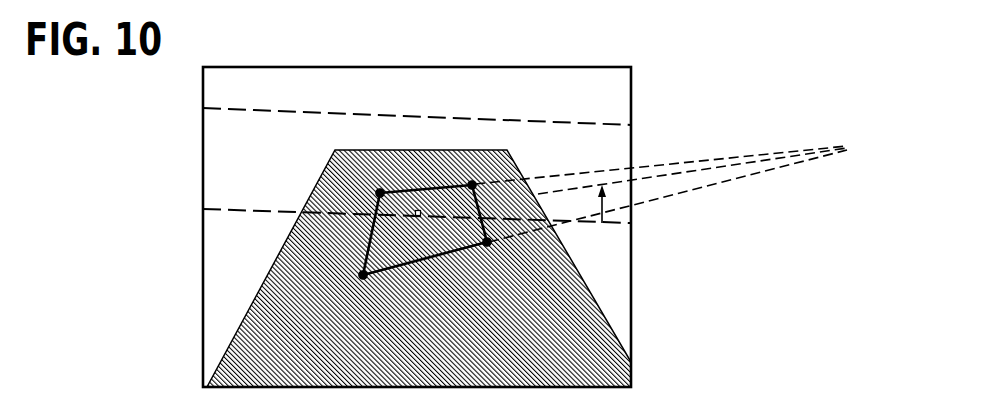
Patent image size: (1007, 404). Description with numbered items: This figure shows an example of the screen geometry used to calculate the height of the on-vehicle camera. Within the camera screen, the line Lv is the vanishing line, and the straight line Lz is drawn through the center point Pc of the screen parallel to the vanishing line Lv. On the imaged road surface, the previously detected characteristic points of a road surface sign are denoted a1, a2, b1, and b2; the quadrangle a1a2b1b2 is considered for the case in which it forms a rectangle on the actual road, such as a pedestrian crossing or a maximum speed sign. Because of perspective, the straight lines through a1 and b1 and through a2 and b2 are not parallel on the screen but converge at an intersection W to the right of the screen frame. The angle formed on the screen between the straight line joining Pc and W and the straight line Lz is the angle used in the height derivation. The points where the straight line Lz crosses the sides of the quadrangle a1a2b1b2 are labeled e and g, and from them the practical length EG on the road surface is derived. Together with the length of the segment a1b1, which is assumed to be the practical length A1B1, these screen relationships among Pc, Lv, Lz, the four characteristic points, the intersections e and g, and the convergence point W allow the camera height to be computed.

The center point of the screen Pc is at (417, 210).
The vanishing line Lv is at (571, 122).
The straight line parallel to the vanishing line Lz is at (242, 208).
The characteristic point of the road surface sign a1 is at (362, 276).
The characteristic point of the road surface sign a2 is at (378, 192).
The characteristic point of the road surface sign b1 is at (489, 243).
The characteristic point of the road surface sign b2 is at (473, 184).
The intersection point of the quadrangle and line Lz e is at (371, 238).
The intersection point of the quadrangle and line Lz g is at (490, 238).
The intersection of straight lines a1b1 and a2b2 W is at (675, 194).